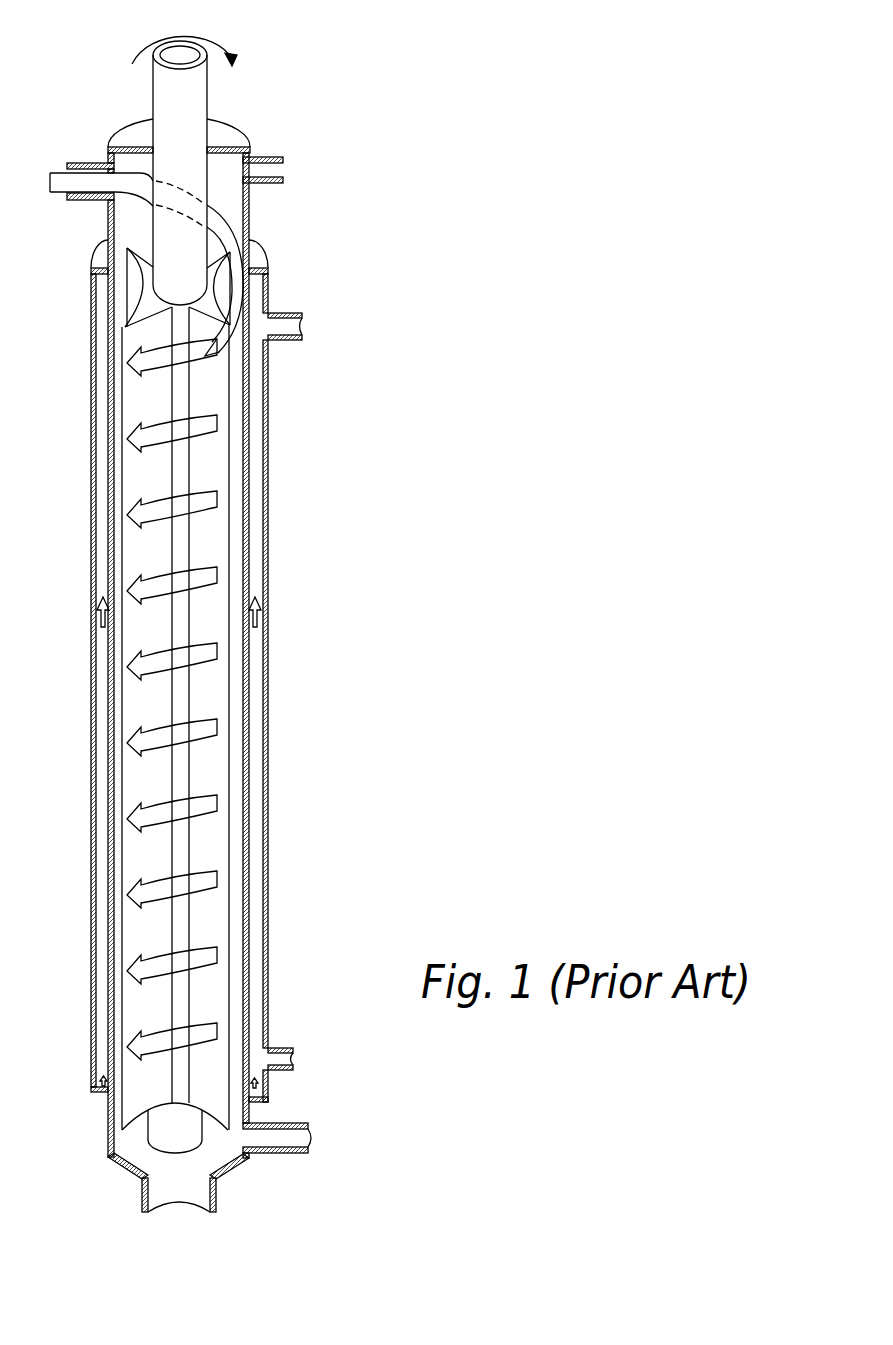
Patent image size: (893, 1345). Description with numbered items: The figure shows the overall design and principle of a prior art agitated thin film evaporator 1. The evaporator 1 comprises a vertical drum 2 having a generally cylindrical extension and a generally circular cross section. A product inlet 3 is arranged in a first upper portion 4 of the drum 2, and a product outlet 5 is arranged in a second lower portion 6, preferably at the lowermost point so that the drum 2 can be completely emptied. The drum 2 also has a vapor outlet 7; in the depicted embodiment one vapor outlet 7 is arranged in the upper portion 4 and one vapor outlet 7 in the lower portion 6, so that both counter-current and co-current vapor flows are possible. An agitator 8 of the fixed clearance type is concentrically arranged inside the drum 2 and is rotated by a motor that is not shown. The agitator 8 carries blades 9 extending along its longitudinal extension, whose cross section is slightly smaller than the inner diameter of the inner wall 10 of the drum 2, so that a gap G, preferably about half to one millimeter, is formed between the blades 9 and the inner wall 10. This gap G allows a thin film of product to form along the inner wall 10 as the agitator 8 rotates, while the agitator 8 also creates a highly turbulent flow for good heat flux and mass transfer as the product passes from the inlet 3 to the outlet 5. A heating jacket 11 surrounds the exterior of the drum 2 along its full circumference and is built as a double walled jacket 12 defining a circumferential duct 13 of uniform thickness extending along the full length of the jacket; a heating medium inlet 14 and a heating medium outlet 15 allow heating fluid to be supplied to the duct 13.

The evaporator 1 is at (427, 420).
The vertical drum 2 is at (250, 212).
The product inlet 3 is at (84, 160).
The first upper portion 4 is at (251, 242).
The product outlet 5 is at (177, 1187).
The second lower portion 6 is at (112, 1147).
The vapor outlet 7 is at (284, 172).
The agitator 8 is at (195, 688).
The blades 9 is at (232, 277).
The inner wall 10 is at (248, 525).
The heating jacket 11 is at (263, 718).
The double walled jacket 12 is at (265, 808).
The circumferential duct 13 is at (253, 757).
The heating medium inlet 14 is at (278, 1057).
The heating medium outlet 15 is at (283, 340).
The gap G is at (237, 476).